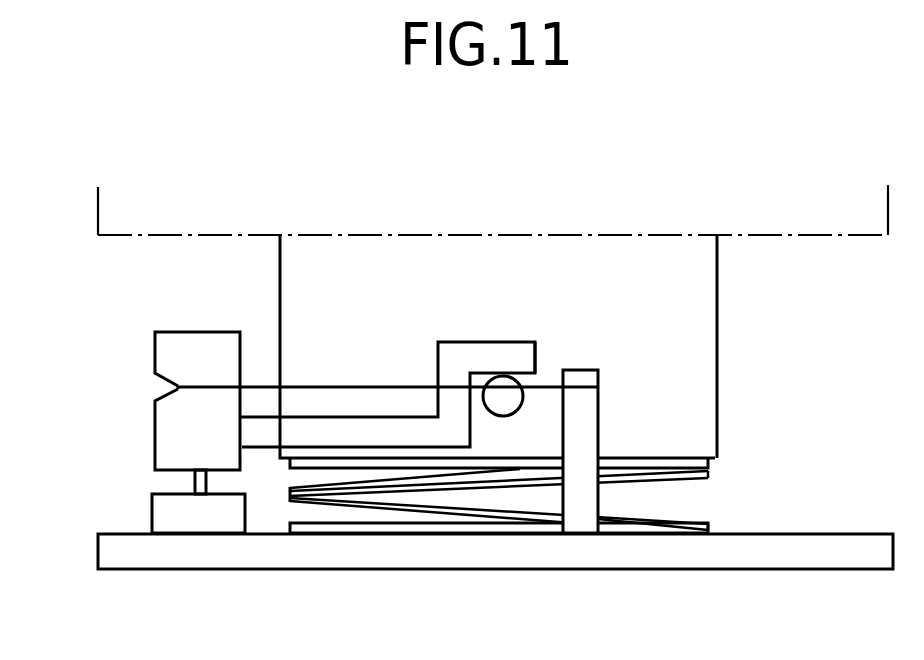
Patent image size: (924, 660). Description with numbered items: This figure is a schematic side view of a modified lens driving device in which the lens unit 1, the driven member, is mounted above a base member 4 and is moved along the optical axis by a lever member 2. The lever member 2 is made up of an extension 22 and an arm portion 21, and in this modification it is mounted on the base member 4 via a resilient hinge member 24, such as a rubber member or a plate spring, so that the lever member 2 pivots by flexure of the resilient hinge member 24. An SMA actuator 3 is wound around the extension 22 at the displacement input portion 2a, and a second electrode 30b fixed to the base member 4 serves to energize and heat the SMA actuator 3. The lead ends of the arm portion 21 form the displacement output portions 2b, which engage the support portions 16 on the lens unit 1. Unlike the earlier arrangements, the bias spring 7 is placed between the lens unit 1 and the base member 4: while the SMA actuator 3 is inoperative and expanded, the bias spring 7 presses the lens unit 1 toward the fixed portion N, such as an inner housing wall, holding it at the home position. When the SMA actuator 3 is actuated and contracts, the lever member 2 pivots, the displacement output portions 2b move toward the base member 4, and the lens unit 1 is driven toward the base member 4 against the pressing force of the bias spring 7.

The fixed portion N is at (200, 236).
The lens unit 1 is at (718, 300).
The lever member 2 is at (56, 303).
The displacement input portion 2a is at (180, 388).
The displacement output portions 2b is at (538, 378).
The SMA actuator 3 is at (352, 386).
The base member 4 is at (848, 553).
The bias spring 7 is at (360, 503).
The support portions 16 is at (513, 415).
The arm portion 21 is at (323, 430).
The extension 22 is at (155, 352).
The resilient hinge member 24 is at (192, 485).
The second electrode 30b is at (587, 368).